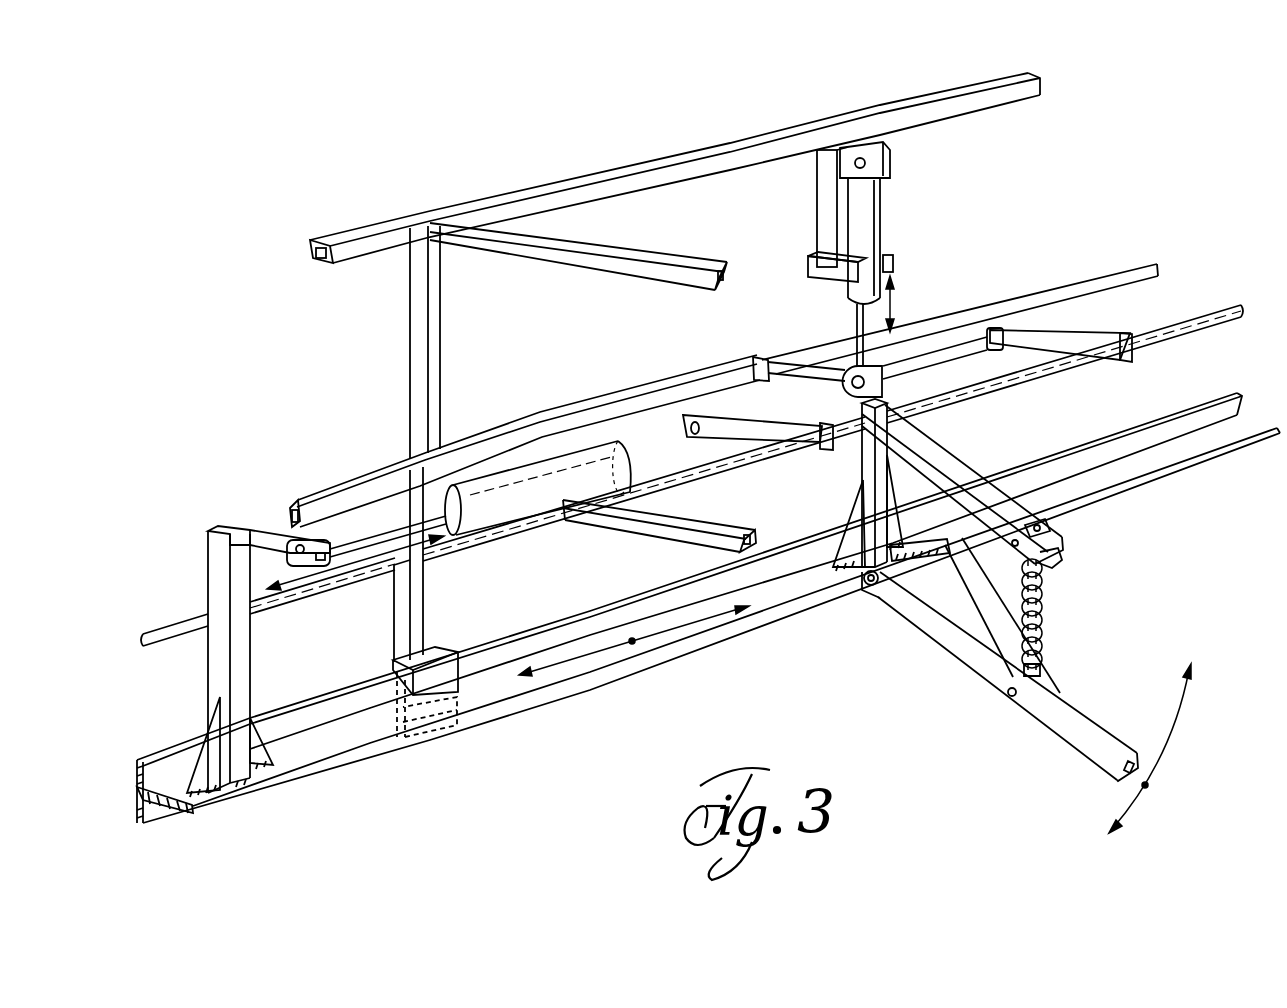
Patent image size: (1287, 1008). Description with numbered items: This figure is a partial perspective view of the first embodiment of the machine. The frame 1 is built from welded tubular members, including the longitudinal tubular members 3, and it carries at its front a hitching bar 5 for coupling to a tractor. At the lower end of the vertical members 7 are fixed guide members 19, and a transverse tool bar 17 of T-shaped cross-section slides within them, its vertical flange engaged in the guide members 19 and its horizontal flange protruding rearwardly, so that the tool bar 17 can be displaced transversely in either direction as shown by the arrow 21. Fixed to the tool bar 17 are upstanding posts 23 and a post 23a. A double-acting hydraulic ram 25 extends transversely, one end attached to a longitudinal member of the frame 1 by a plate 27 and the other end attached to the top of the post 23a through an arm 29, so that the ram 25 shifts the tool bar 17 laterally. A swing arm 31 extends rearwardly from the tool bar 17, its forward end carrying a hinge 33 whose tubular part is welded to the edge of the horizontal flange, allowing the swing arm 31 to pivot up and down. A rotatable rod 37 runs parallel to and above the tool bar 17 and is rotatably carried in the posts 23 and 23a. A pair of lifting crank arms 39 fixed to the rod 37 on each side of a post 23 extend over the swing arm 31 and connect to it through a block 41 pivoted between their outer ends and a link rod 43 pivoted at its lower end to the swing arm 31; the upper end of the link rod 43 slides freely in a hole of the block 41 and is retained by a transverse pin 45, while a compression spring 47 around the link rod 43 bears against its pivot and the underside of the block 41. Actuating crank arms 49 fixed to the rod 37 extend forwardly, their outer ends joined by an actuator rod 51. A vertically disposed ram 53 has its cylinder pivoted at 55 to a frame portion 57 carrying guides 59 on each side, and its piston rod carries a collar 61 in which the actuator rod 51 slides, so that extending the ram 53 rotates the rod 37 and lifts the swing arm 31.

The frame 1 is at (404, 308).
The longitudinal tubular members 3 is at (1004, 93).
The hitching bar 5 is at (643, 249).
The vertical members 7 is at (440, 348).
The tool bar 17 is at (333, 742).
The guide member 19 is at (434, 651).
The arrow 21 is at (672, 624).
The upstanding post 23 is at (863, 459).
The post 23a is at (248, 652).
The double-acting hydraulic cylinder and piston unit (ram) 25 is at (521, 483).
The plate 27 is at (645, 480).
The arm 29 is at (250, 537).
The swing arm 31 is at (1052, 722).
The hinge 33 is at (868, 588).
The rotatable rod 37 is at (178, 629).
The lifting crank arm 39 is at (933, 463).
The block 41 is at (1060, 553).
The link rod 43 is at (1044, 600).
The transverse pin 45 is at (1046, 528).
The compression spring 47 is at (1042, 631).
The actuating crank arm 49 is at (753, 437).
The actuator rod 51 is at (953, 343).
The double-acting hydraulic ram 53 is at (867, 203).
The pivot 55 is at (858, 158).
The frame portion 57 is at (827, 190).
The guide 59 is at (897, 260).
The collar 61 is at (874, 370).